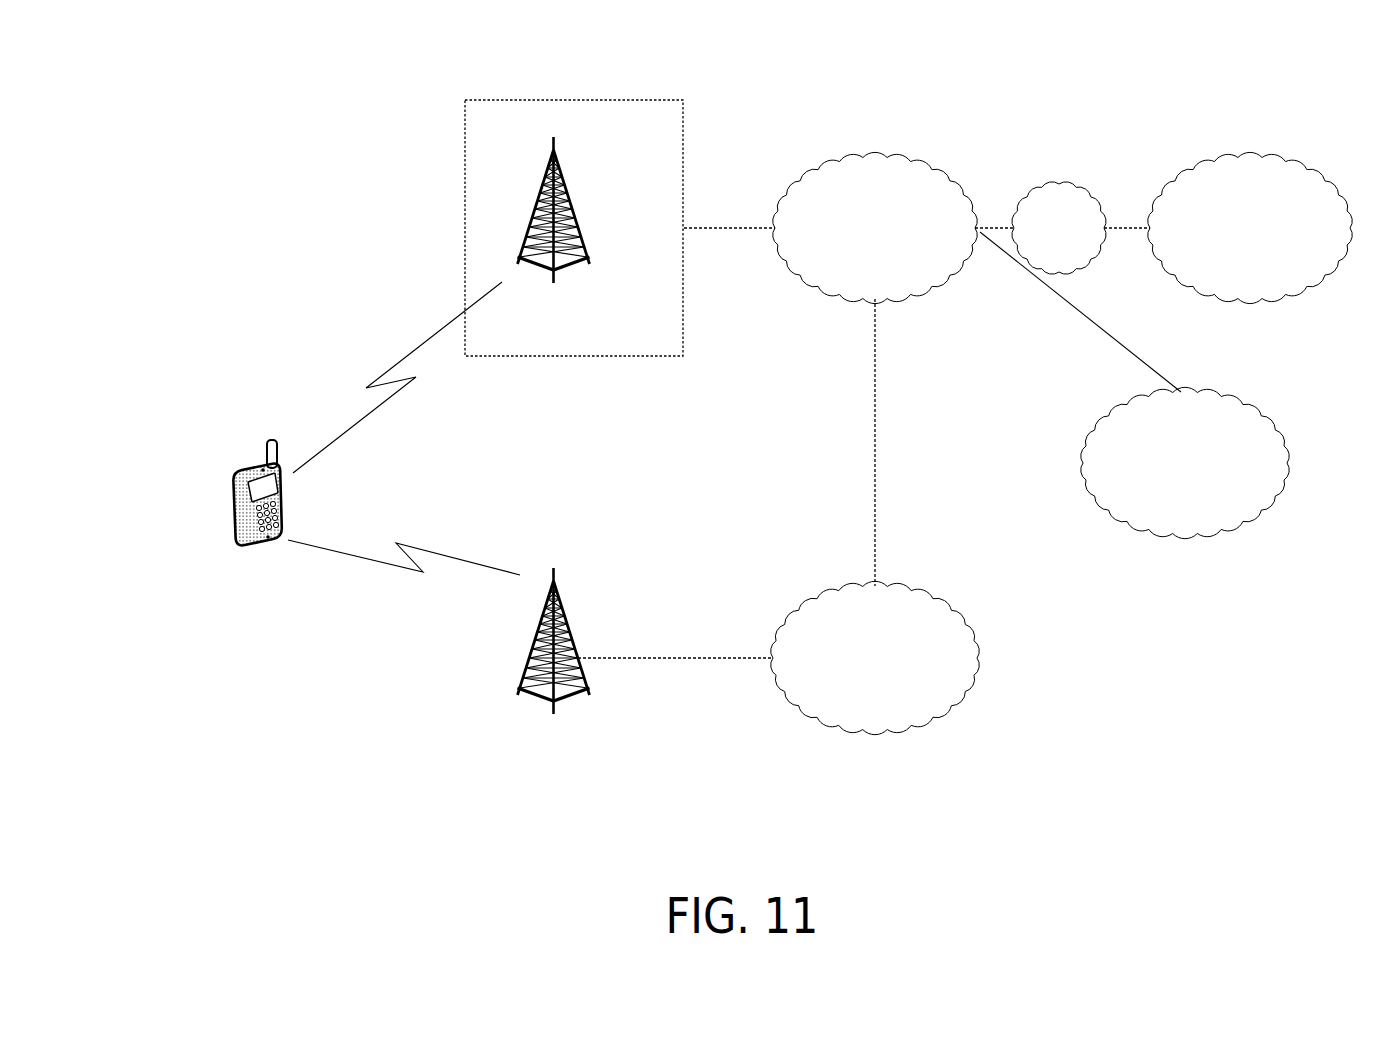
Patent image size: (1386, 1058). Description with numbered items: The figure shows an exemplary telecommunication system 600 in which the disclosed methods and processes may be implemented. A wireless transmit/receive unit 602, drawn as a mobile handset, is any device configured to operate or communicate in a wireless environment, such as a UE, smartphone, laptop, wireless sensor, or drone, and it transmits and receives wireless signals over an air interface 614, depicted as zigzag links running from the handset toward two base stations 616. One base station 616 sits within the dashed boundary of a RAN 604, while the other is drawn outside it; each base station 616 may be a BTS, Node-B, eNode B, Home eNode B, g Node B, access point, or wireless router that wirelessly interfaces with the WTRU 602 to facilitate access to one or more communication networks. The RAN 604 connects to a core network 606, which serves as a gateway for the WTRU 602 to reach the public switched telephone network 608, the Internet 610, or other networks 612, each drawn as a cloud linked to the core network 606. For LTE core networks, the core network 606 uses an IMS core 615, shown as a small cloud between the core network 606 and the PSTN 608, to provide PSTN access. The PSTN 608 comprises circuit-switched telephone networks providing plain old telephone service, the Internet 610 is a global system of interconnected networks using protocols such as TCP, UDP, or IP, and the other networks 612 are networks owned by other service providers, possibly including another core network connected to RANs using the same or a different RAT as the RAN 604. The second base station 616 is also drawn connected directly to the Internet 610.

The telecommunication system 600 is at (1171, 38).
The wireless transmit/receive unit 602 is at (230, 488).
The RAN 604 is at (628, 135).
The core network 606 is at (855, 208).
The public switched telephone network 608 is at (1230, 207).
The Internet 610 is at (855, 635).
The other networks 612 is at (1165, 443).
The air interface 614 is at (398, 390).
The IMS core 615 is at (1044, 237).
The base station 616 is at (556, 281).